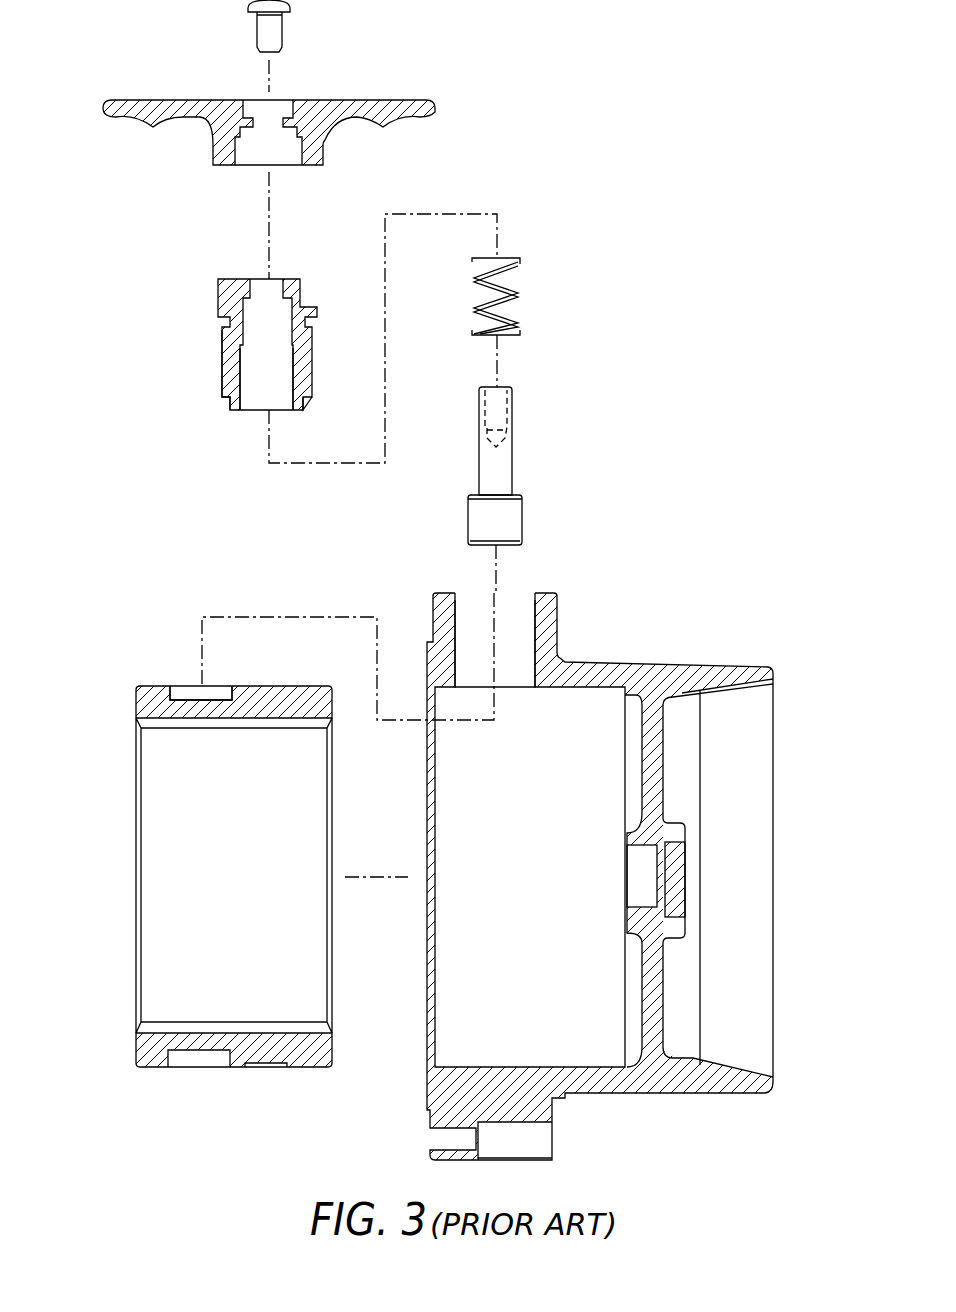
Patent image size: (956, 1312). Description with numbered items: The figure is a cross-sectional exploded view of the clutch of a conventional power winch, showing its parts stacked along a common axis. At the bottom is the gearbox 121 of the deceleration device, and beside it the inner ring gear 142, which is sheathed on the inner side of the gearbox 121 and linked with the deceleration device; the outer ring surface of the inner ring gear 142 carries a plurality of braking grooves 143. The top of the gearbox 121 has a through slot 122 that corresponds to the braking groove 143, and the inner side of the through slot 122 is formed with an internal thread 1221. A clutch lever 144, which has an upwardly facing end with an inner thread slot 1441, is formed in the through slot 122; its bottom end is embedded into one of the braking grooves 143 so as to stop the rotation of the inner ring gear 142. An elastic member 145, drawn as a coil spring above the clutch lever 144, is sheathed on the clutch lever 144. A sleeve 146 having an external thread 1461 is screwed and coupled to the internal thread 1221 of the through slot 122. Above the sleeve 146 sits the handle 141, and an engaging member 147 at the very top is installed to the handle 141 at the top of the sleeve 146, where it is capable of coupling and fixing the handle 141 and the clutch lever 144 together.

The gearbox 121 is at (647, 680).
The through slot 122 is at (510, 630).
The internal thread 1221 is at (455, 640).
The handle 141 is at (363, 108).
The inner ring gear 142 is at (147, 707).
The braking groove 143 is at (187, 695).
The clutch lever 144 is at (539, 466).
The inner thread slot 1441 is at (497, 415).
The elastic member 145 is at (523, 297).
The sleeve 146 is at (238, 352).
The external thread 1461 is at (225, 367).
The engaging member 147 is at (272, 32).